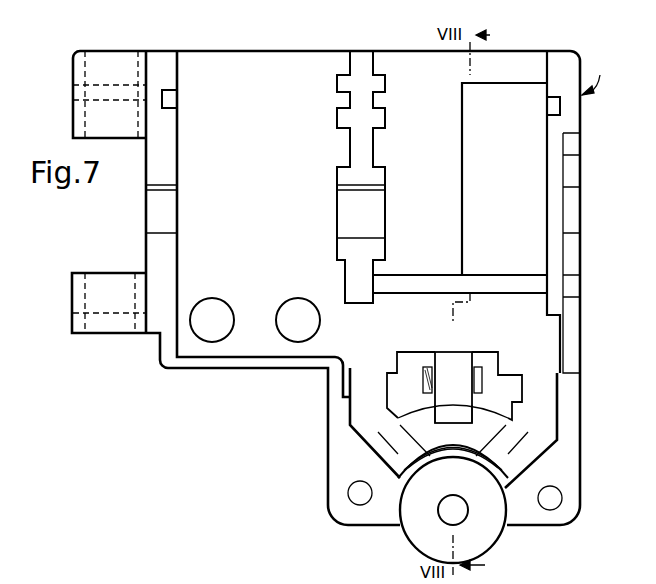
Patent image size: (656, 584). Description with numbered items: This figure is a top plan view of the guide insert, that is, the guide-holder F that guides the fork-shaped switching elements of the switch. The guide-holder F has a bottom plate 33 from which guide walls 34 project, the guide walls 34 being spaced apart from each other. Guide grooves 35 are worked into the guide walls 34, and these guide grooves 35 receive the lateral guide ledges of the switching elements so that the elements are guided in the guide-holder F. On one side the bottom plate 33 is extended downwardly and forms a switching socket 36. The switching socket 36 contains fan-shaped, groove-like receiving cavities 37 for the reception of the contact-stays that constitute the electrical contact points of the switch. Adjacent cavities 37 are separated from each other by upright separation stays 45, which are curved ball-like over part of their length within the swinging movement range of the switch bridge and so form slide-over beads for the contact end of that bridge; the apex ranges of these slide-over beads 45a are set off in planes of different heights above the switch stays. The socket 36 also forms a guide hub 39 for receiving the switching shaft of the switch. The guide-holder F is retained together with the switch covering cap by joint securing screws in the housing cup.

The bottom plate 33 is at (197, 348).
The guide walls 34 is at (180, 56).
The guide grooves 35 is at (166, 100).
The switching socket 36 is at (563, 478).
The receiving cavities 37 is at (368, 382).
The guide hub 39 is at (462, 516).
The separation stays 45 is at (427, 364).
The slide-over beads 45a is at (406, 428).
The guide-holder F is at (594, 74).